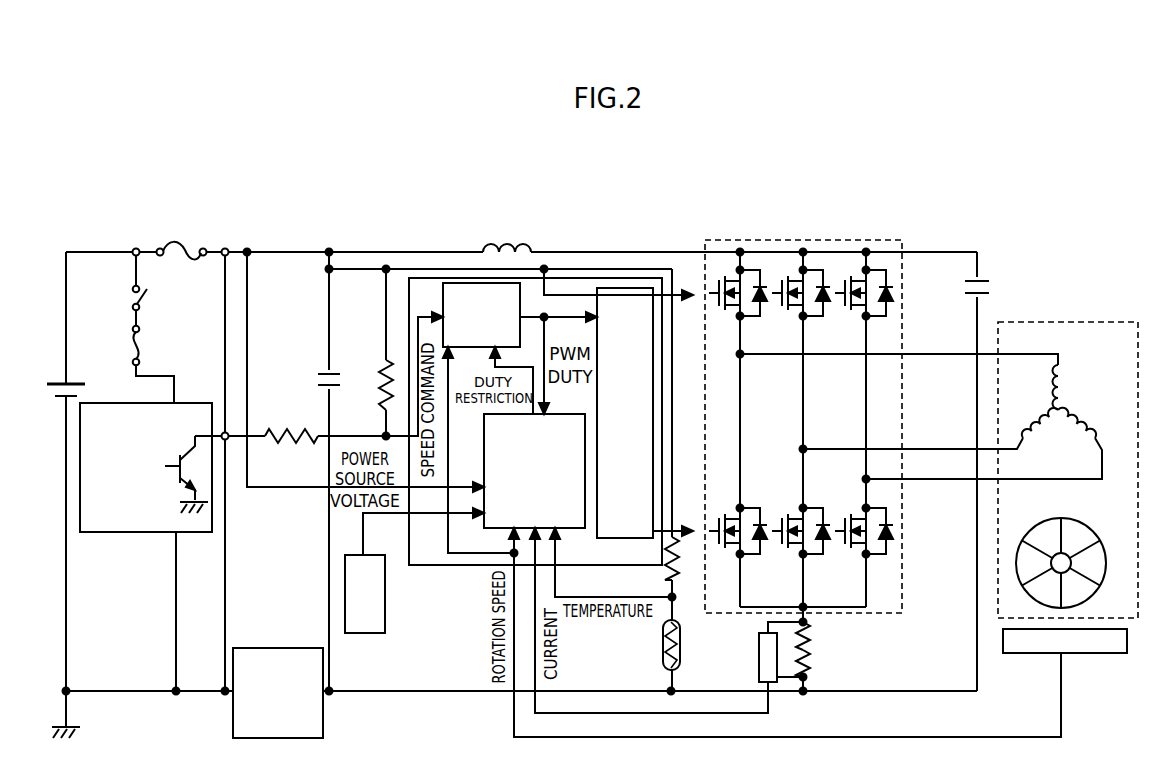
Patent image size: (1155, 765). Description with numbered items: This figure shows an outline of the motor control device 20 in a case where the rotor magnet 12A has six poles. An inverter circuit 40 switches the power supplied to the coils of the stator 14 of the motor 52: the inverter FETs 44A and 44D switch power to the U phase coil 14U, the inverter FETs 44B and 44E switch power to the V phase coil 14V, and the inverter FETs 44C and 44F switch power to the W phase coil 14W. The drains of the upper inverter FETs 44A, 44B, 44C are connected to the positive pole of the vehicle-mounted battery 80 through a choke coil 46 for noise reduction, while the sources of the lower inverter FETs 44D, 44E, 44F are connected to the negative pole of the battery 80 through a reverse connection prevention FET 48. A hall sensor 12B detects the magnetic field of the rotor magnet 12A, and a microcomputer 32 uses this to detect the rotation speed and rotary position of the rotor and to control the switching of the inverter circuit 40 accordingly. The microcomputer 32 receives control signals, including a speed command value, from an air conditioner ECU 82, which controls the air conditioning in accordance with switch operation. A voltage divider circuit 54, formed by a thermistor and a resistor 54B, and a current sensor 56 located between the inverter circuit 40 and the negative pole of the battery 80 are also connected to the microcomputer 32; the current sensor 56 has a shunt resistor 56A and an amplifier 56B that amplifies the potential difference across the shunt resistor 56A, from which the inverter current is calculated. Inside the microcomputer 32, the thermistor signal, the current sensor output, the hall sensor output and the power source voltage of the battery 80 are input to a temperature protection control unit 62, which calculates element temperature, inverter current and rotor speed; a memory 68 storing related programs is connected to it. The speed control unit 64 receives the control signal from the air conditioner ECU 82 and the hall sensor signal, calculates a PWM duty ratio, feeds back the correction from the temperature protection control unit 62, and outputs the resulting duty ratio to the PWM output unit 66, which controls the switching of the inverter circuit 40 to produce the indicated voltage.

The motor control device 20 is at (988, 175).
The battery 80 is at (54, 374).
The air conditioner ECU 82 is at (178, 402).
The reverse connection prevention FET 48 is at (278, 648).
The choke coil 46 is at (511, 242).
The microcomputer 32 is at (473, 566).
The speed control unit 64 is at (458, 283).
The temperature protection control unit 62 is at (478, 528).
The PWM output unit 66 is at (628, 528).
The memory 68 is at (385, 633).
The voltage divider circuit 54 is at (655, 621).
The resistor 54B is at (678, 575).
The current sensor 56 is at (847, 652).
The shunt resistor 56A is at (812, 637).
The amplifier 56B is at (786, 660).
The inverter circuit 40 is at (807, 240).
The inverter FET 44A is at (766, 308).
The inverter FET 44B is at (826, 308).
The inverter FET 44C is at (894, 308).
The inverter FET 44D is at (766, 548).
The inverter FET 44E is at (826, 548).
The inverter FET 44F is at (894, 548).
The motor 52 is at (1053, 322).
The stator 14 is at (1077, 397).
The U phase coil 14U is at (1063, 376).
The V phase coil 14V is at (1046, 432).
The W phase coil 14W is at (1090, 431).
The rotor magnet 12A is at (1083, 524).
The hall sensor 12B is at (1085, 654).